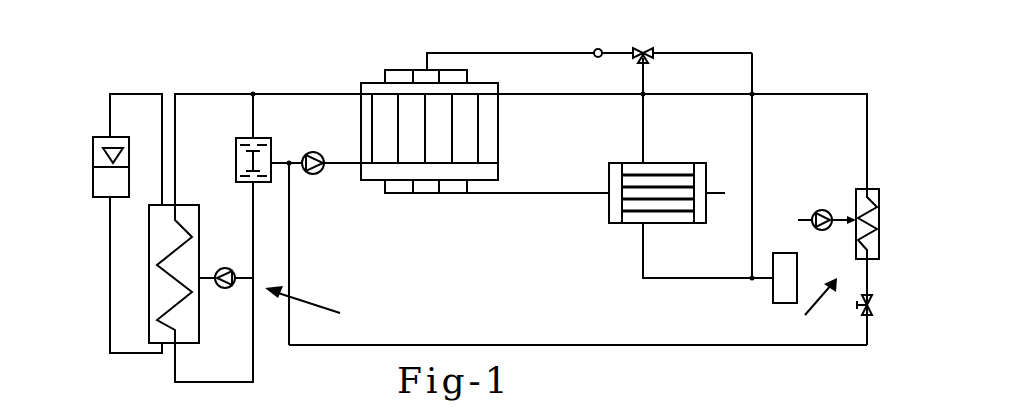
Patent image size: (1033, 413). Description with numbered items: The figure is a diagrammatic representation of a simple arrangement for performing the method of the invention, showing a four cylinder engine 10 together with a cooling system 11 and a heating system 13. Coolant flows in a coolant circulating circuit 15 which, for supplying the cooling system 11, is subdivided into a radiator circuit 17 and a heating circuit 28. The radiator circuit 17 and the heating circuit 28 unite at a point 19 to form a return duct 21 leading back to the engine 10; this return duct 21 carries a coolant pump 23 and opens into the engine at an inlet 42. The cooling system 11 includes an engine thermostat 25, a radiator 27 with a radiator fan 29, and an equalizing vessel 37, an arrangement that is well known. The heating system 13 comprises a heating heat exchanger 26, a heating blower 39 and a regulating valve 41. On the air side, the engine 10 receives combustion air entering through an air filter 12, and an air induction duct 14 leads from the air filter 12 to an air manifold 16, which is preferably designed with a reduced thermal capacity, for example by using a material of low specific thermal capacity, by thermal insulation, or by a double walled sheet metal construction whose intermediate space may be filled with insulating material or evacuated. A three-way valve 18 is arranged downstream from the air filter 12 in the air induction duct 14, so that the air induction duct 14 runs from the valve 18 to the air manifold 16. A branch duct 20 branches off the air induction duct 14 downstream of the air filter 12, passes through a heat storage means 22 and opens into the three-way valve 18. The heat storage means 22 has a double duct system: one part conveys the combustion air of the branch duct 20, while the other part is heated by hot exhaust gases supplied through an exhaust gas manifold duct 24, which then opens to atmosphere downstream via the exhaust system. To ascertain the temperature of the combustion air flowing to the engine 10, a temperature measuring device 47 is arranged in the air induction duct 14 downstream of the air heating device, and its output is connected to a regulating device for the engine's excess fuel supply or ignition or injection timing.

The four cylinder engine 10 is at (368, 145).
The cooling system 11 is at (319, 307).
The air filter 12 is at (773, 290).
The heating system 13 is at (816, 310).
The air induction duct 14 is at (753, 168).
The coolant circulating circuit 15 is at (302, 95).
The air manifold 16 is at (385, 76).
The radiator circuit 17 is at (257, 91).
The three-way valve 18 is at (650, 56).
The union point 19 is at (291, 166).
The branch duct 20 is at (665, 279).
The return duct 21 is at (337, 168).
The heat storage means 22 is at (662, 163).
The coolant pump 23 is at (326, 152).
The exhaust gas manifold duct 24 is at (421, 194).
The engine thermostat 25 is at (236, 164).
The heating heat exchanger 26 is at (862, 188).
The radiator 27 is at (190, 345).
The heating circuit 28 is at (817, 94).
The radiator fan 29 is at (226, 268).
The equalizing vessel 37 is at (93, 160).
The heating blower 39 is at (820, 210).
The regulating valve 41 is at (874, 306).
The engine coolant inlet 42 is at (351, 172).
The temperature measuring device 47 is at (597, 48).